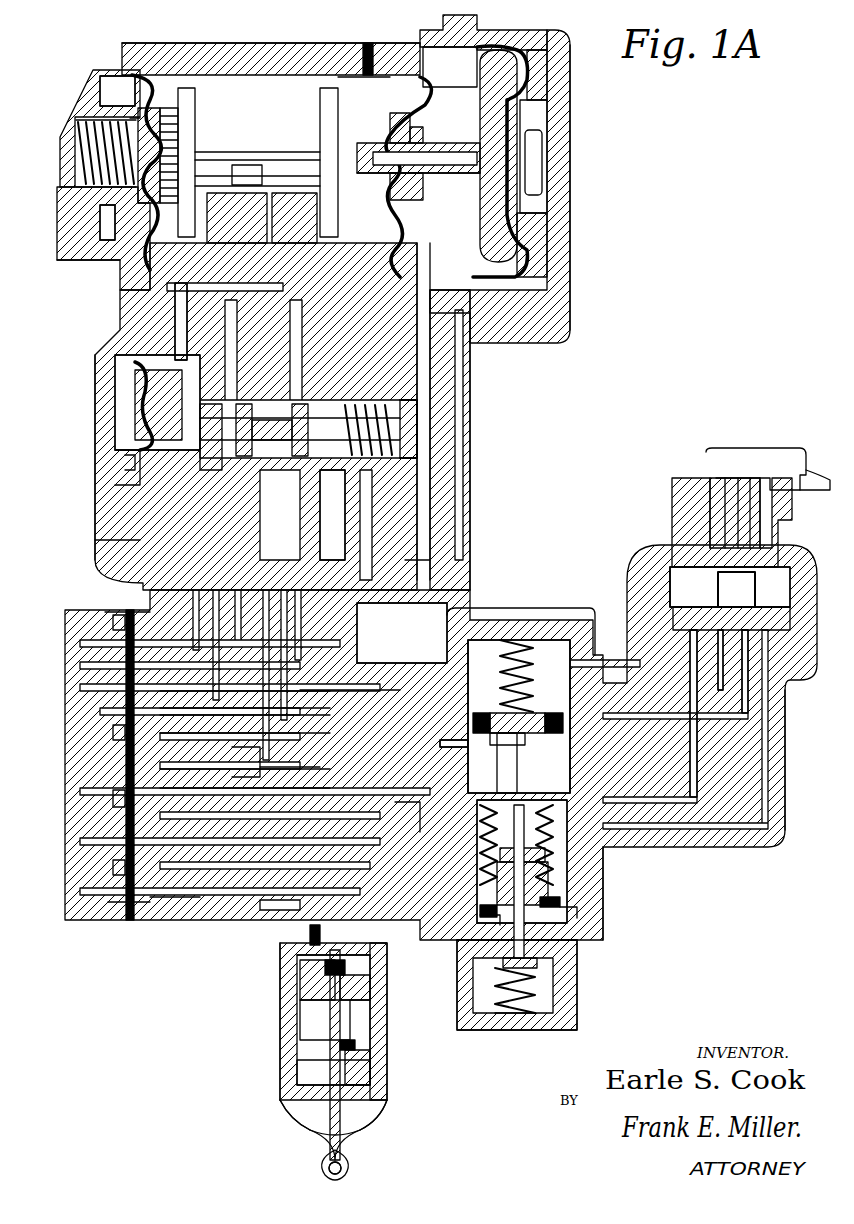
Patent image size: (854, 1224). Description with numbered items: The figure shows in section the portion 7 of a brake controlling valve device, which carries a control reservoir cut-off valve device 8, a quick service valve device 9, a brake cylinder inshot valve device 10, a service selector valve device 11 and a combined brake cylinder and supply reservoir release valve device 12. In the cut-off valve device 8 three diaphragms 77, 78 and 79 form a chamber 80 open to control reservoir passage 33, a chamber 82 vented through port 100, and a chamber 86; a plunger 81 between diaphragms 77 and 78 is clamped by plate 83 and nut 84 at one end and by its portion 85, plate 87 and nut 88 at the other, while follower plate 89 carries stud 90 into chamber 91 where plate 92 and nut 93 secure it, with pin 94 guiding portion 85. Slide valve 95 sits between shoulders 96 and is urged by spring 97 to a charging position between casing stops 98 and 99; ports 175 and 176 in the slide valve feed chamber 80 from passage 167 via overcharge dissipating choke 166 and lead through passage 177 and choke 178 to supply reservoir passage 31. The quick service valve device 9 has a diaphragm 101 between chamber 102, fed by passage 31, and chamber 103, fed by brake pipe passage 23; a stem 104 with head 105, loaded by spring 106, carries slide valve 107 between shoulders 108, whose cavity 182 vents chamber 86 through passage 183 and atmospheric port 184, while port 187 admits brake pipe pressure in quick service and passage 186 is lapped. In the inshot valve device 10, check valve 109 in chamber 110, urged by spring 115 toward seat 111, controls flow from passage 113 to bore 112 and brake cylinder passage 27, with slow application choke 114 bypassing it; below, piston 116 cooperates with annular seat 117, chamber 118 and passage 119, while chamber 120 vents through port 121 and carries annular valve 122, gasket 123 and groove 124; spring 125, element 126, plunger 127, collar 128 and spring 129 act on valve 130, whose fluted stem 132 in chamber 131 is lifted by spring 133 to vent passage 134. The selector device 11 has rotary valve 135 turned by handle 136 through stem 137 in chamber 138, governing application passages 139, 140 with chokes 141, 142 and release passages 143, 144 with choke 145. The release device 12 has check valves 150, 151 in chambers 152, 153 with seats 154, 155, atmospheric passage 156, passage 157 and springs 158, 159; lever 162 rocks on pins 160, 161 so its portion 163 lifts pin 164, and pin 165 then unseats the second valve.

The portion 7 is at (104, 302).
The control reservoir cut-off valve device 8 is at (301, 34).
The quick service valve device 9 is at (88, 414).
The brake cylinder inshot valve device 10 is at (536, 604).
The service selector valve device 11 is at (745, 447).
The combined brake cylinder and supply reservoir release valve device 12 is at (272, 1102).
The passage 23 is at (130, 622).
The brake cylinder passage 27 is at (192, 902).
The supply reservoir passage 31 is at (110, 543).
The control reservoir passage 33 is at (358, 620).
The flexible diaphragm 77 is at (165, 100).
The flexible diaphragm 78 is at (368, 75).
The flexible diaphragm 79 is at (492, 55).
The chamber 80 is at (325, 88).
The plunger 81 is at (192, 108).
The chamber 82 is at (125, 85).
The plate 83 is at (138, 118).
The nut 84 is at (159, 155).
The axially arranged portion 85 is at (468, 148).
The chamber 86 is at (457, 52).
The plate 87 is at (410, 120).
The nut 88 is at (420, 132).
The follower plate 89 is at (485, 110).
The stud 90 is at (517, 157).
The chamber 91 is at (545, 247).
The plate 92 is at (535, 215).
The nut 93 is at (540, 190).
The pin 94 is at (455, 175).
The slide valve 95 is at (283, 193).
The shoulders 96 is at (300, 190).
The spring 97 is at (90, 240).
The casing stop 98 is at (545, 100).
The casing stop 99 is at (112, 240).
The port 100 is at (95, 180).
The flexible diaphragm 101 is at (130, 498).
The chamber 102 is at (125, 476).
The chamber 103 is at (165, 378).
The stem 104 is at (280, 425).
The head 105 is at (138, 407).
The spring 106 is at (440, 407).
The slide valve 107 is at (215, 474).
The shoulders 108 is at (242, 428).
The check valve 109 is at (488, 716).
The chamber 110 is at (552, 650).
The seat 111 is at (460, 754).
The bore 112 is at (548, 716).
The passage 113 is at (392, 690).
The slow application choke 114 is at (239, 697).
The spring 115 is at (510, 648).
The piston 116 is at (615, 814).
The annular seat 117 is at (552, 775).
The chamber 118 is at (548, 794).
The passage 119 is at (420, 580).
The chamber 120 is at (565, 882).
The vent port 121 is at (577, 930).
The annular valve 122 is at (572, 900).
The gasket 123 is at (565, 895).
The annular groove 124 is at (558, 842).
The spring 125 is at (577, 918).
The cup-shaped element 126 is at (565, 917).
The plunger 127 is at (560, 882).
The collar 128 is at (469, 922).
The spring 129 is at (513, 927).
The valve 130 is at (545, 942).
The chamber 131 is at (555, 997).
The fluted stem 132 is at (555, 980).
The spring 133 is at (523, 1002).
The passage 134 is at (372, 962).
The rotary valve 135 is at (770, 600).
The handle 136 is at (812, 478).
The operating stem 137 is at (735, 521).
The chamber 138 is at (665, 572).
The application passage 139 is at (690, 674).
The application passage 140 is at (715, 694).
The choke 141 is at (239, 723).
The choke 142 is at (238, 781).
The release passage 143 is at (745, 705).
The release passage 144 is at (768, 747).
The choke 145 is at (108, 907).
The check valve 150 is at (285, 1056).
The check valve 151 is at (385, 985).
The chamber 152 is at (385, 1041).
The chamber 153 is at (300, 942).
The seat 154 is at (300, 1076).
The seat 155 is at (385, 1002).
The atmospheric passage 156 is at (385, 1061).
The passage 157 is at (295, 986).
The spring 158 is at (300, 1025).
The spring 159 is at (280, 966).
The pin 160 is at (290, 1107).
The pin 161 is at (380, 1107).
The lever 162 is at (350, 1167).
The portion 163 is at (330, 1142).
The pin 164 is at (385, 1080).
The pin 165 is at (385, 1021).
The overcharge dissipating choke 166 is at (152, 907).
The passage 167 is at (465, 548).
The port 175 is at (232, 193).
The port 176 is at (258, 193).
The passage 177 is at (170, 325).
The choke 178 is at (118, 620).
The cavity 182 is at (368, 457).
The passage 183 is at (430, 518).
The atmospheric port 184 is at (375, 500).
The passage 186 is at (238, 754).
The port 187 is at (262, 455).